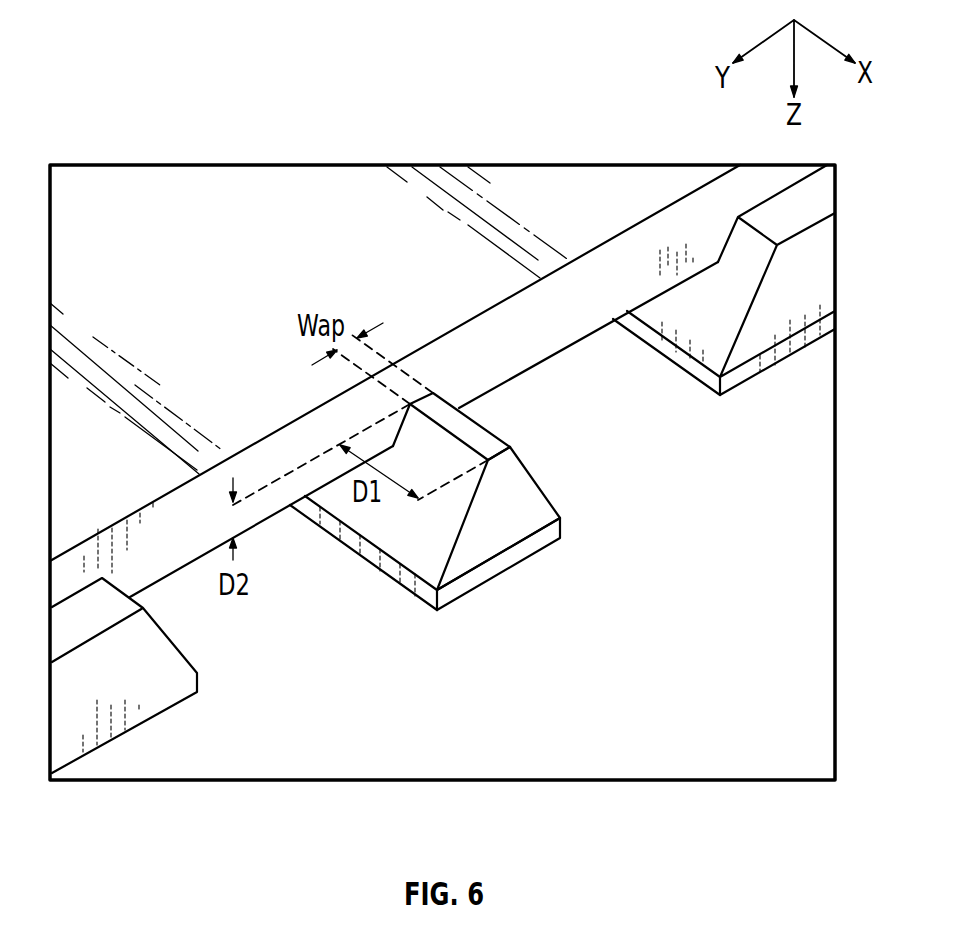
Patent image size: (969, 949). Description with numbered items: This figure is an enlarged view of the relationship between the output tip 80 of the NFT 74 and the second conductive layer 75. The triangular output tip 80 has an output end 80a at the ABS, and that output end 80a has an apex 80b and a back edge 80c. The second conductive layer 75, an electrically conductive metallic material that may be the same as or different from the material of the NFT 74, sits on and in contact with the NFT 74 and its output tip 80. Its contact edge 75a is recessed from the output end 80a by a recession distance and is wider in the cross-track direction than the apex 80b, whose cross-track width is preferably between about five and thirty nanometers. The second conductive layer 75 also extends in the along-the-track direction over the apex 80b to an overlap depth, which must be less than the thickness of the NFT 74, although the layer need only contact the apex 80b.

The NFT 74 is at (823, 190).
The second conductive layer 75 is at (531, 186).
The contact edge 75a is at (560, 338).
The output tip 80 is at (427, 525).
The output end 80a is at (522, 500).
The apex 80b is at (497, 447).
The back edge 80c is at (517, 563).